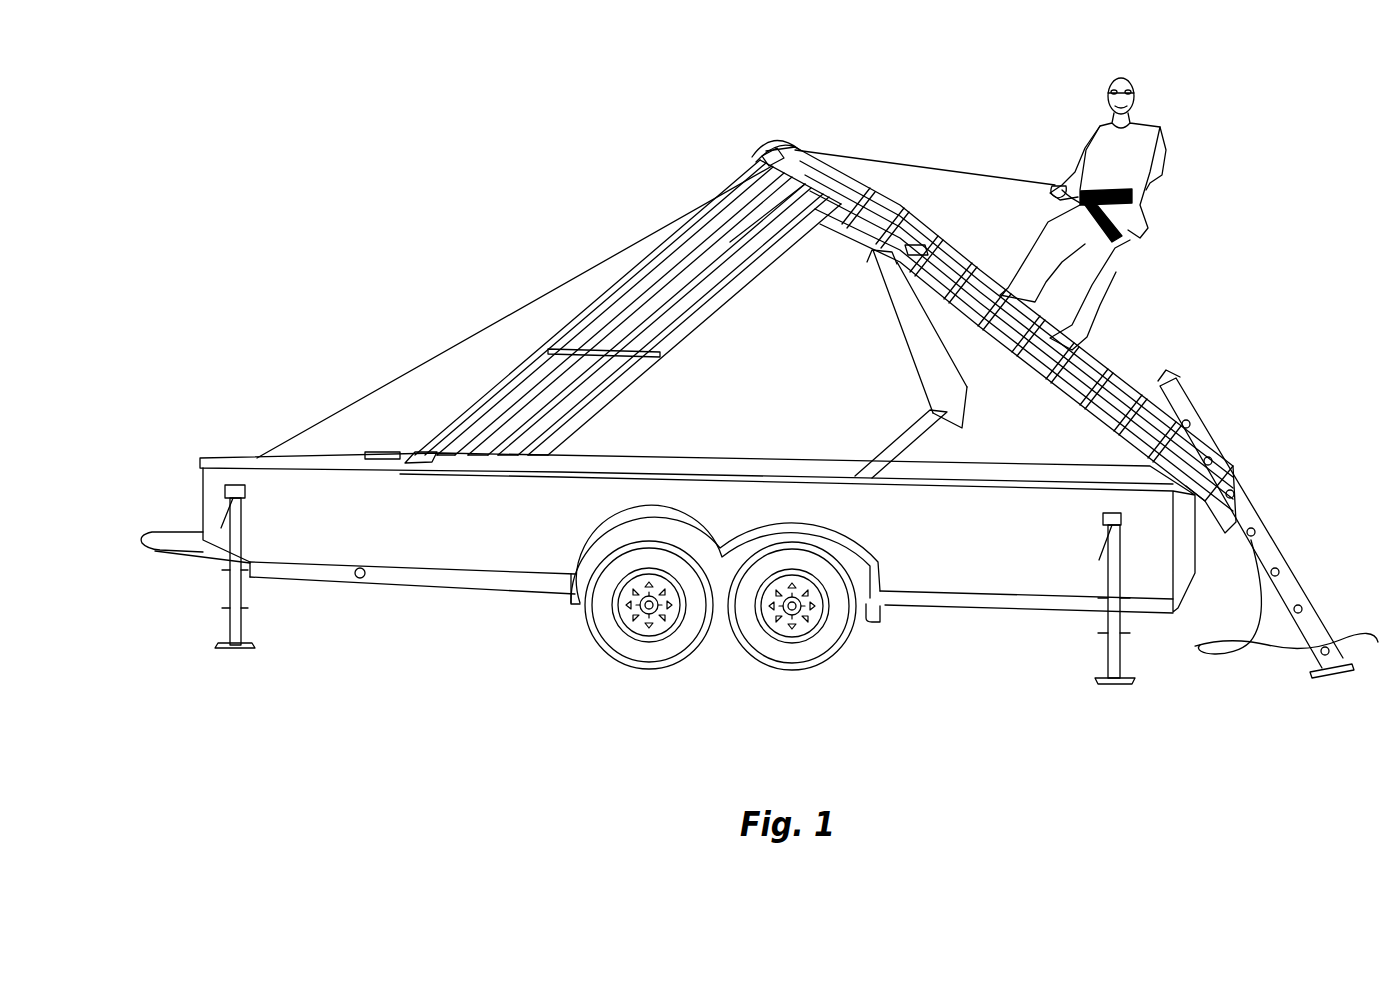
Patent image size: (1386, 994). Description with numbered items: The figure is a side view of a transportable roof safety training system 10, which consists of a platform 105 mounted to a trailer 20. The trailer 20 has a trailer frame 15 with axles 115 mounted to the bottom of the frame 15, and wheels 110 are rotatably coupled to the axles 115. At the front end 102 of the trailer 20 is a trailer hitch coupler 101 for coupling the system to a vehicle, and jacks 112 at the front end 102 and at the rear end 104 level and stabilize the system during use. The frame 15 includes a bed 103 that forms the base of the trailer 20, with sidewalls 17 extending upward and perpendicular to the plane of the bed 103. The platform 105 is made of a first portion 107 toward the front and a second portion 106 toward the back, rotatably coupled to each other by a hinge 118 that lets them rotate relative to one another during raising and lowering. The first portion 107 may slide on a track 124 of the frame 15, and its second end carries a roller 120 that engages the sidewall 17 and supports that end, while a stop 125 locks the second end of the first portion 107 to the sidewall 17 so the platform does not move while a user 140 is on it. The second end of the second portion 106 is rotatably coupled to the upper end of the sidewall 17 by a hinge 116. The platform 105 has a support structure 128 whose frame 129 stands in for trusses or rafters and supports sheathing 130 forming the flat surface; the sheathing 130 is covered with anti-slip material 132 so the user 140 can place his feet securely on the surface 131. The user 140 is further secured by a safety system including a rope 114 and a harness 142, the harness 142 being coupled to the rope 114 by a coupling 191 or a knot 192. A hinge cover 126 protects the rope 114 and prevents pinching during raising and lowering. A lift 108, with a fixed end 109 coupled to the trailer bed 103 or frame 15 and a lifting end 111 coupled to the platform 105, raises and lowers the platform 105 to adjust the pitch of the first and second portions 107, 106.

The transportable roof safety training system 10 is at (418, 178).
The trailer frame 15 is at (203, 480).
The sidewalls 17 is at (470, 560).
The trailer 20 is at (176, 580).
The trailer hitch coupler 101 is at (147, 530).
The front end 102 is at (370, 602).
The bed 103 is at (514, 605).
The rear end 104 is at (973, 620).
The platform 105 is at (799, 98).
The second portion 106 is at (985, 272).
The first portion 107 is at (683, 209).
The lift 108 is at (900, 407).
The fixed end 109 is at (955, 436).
The wheels 110 is at (752, 648).
The lifting end 111 is at (964, 378).
The jacks 112 is at (241, 632).
The rope 114 is at (958, 178).
The axles 115 is at (645, 605).
The hinge 116 is at (1182, 486).
The hinge 118 is at (765, 158).
The roller 120 is at (432, 446).
The track 124 is at (392, 450).
The stop 125 is at (410, 432).
The hinge cover 126 is at (772, 142).
The support structure 128 is at (722, 338).
The frame 129 is at (705, 270).
The sheathing 130 is at (790, 236).
The surface 131 is at (872, 255).
The anti-slip material 132 is at (925, 244).
The user 140 is at (1165, 152).
The harness 142 is at (1135, 240).
The coupling 191 is at (1072, 187).
The knot 192 is at (1050, 190).